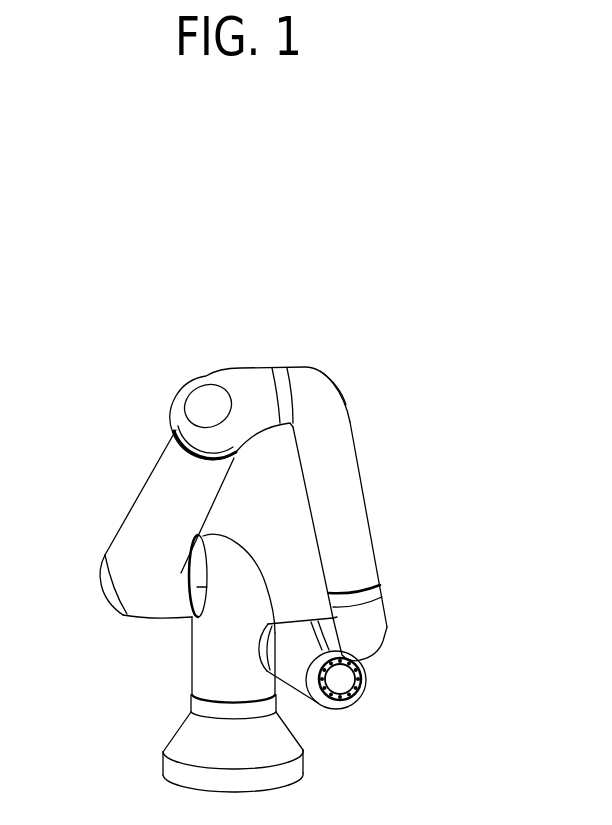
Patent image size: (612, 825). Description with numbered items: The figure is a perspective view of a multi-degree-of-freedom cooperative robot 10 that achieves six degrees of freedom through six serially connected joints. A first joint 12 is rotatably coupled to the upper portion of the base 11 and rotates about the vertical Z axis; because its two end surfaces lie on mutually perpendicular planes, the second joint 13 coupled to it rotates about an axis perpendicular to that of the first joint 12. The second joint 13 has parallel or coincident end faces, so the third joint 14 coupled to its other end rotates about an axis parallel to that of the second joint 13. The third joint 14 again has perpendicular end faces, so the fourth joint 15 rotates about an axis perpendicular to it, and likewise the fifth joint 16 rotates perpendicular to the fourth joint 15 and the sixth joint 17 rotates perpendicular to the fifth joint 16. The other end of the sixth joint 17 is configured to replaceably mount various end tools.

The cooperative robot 10 is at (104, 360).
The base 11 is at (190, 735).
The first joint 12 is at (200, 655).
The second joint 13 is at (143, 501).
The third joint 14 is at (352, 495).
The fourth joint 15 is at (368, 632).
The fifth joint 16 is at (285, 632).
The sixth joint 17 is at (307, 635).